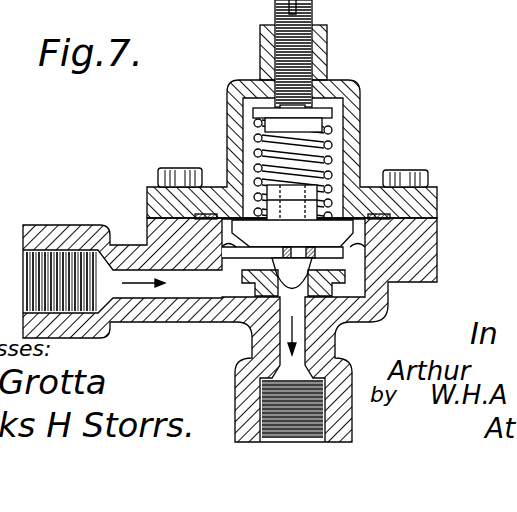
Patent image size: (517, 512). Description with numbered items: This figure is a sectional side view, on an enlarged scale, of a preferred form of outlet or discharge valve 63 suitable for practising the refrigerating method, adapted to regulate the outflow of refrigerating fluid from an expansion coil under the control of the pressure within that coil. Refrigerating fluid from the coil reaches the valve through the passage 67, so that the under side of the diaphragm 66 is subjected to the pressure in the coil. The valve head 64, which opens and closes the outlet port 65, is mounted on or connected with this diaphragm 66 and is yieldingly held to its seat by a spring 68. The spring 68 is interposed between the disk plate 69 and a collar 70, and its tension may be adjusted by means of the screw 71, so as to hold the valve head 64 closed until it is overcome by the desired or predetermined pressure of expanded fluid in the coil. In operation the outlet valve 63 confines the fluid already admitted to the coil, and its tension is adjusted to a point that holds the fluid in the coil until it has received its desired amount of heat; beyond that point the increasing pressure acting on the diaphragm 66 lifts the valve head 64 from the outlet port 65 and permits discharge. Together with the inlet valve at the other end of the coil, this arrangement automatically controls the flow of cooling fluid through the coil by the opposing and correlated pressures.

The outlet valve 63 is at (361, 127).
The valve head 64 is at (363, 315).
The outlet port 65 is at (247, 323).
The diaphragm 66 is at (292, 262).
The passage 67 is at (182, 287).
The spring 68 is at (332, 150).
The disk plate 69 is at (340, 228).
The collar 70 is at (256, 113).
The screw 71 is at (278, 57).